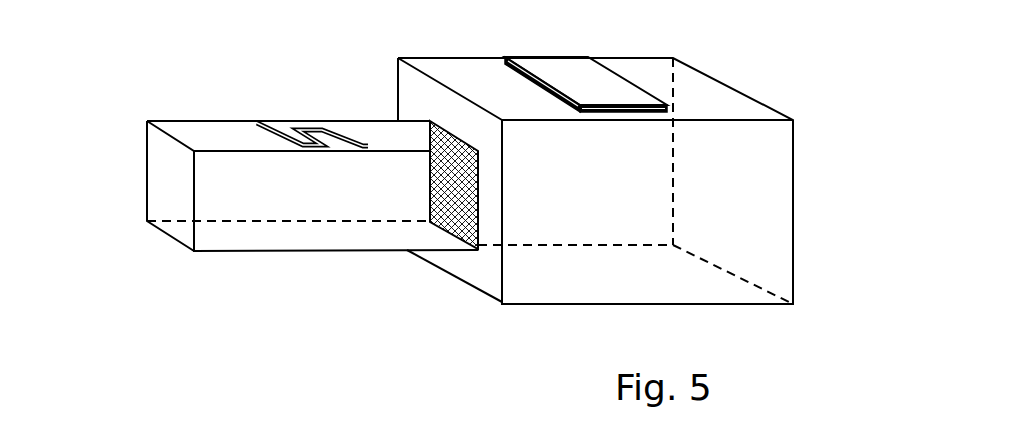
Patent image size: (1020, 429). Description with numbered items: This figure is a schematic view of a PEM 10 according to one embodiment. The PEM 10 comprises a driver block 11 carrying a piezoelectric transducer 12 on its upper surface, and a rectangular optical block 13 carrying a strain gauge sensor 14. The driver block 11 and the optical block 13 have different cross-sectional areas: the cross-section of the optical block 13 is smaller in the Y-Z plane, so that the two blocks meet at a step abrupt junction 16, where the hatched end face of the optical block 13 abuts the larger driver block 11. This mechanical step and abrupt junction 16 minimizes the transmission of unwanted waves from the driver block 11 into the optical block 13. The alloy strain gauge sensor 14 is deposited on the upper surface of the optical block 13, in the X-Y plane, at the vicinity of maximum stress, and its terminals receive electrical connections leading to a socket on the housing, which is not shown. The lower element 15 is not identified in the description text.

The PEM 10 is at (104, 42).
The driver block 11 is at (728, 103).
The piezoelectric transducer 12 is at (568, 65).
The optical block 13 is at (188, 127).
The strain gauge sensor 14 is at (283, 127).
The ground conductor 15 is at (490, 281).
The step abrupt junction 16 is at (440, 232).